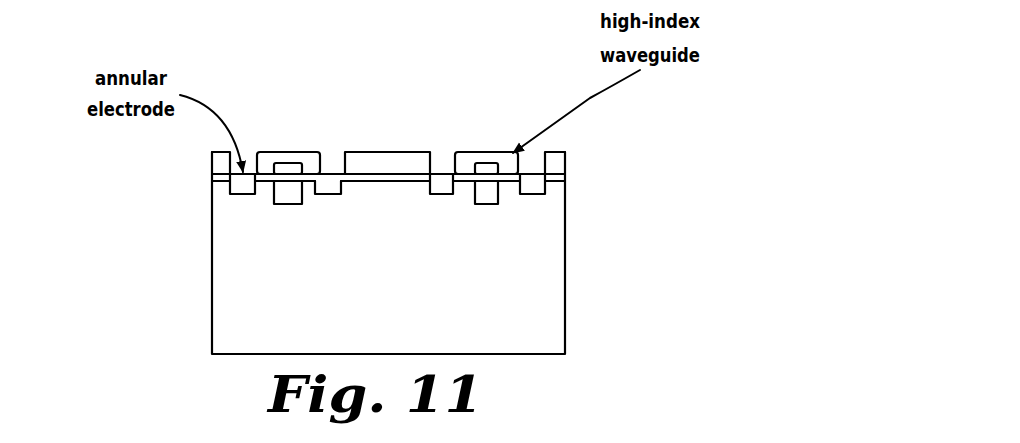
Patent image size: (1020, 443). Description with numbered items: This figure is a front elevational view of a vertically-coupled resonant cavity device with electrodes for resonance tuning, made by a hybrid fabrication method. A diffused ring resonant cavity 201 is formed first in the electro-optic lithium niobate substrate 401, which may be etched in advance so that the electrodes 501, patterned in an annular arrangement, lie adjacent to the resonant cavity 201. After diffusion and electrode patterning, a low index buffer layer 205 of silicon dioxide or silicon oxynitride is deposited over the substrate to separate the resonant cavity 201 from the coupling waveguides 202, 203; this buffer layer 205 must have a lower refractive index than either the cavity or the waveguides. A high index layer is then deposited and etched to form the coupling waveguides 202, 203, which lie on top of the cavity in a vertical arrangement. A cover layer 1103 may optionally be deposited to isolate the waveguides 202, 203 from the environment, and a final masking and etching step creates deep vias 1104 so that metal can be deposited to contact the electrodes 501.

The waveguide 202 is at (289, 164).
The waveguide 203 is at (485, 164).
The low index buffer layer 205 is at (645, 155).
The electrode 501 is at (328, 191).
The cover layer 1103 is at (277, 164).
The deep via 1104 is at (332, 165).
The resonant cavity 201 is at (505, 213).
The substrate 401 is at (388, 253).